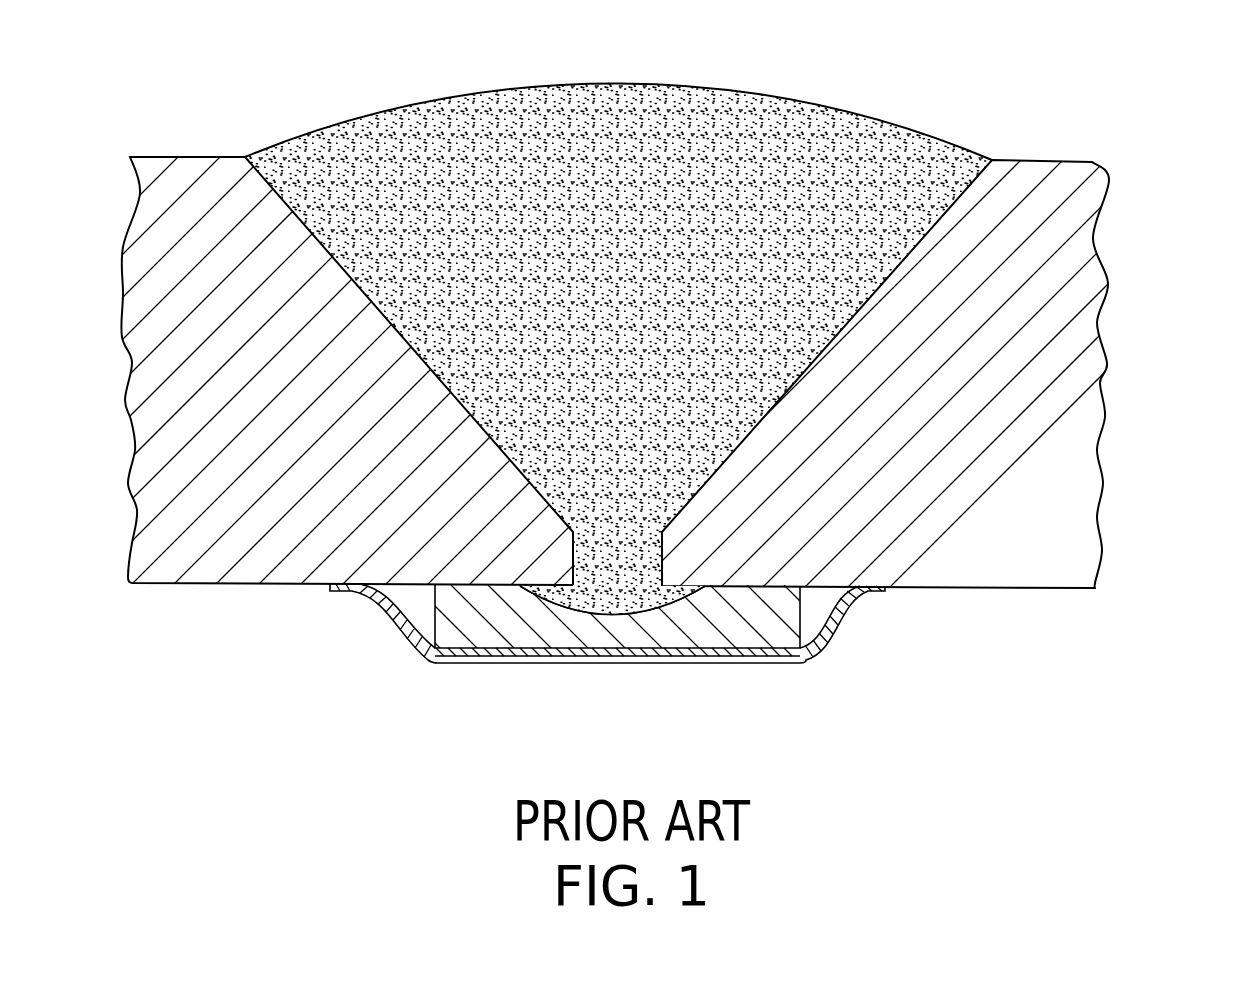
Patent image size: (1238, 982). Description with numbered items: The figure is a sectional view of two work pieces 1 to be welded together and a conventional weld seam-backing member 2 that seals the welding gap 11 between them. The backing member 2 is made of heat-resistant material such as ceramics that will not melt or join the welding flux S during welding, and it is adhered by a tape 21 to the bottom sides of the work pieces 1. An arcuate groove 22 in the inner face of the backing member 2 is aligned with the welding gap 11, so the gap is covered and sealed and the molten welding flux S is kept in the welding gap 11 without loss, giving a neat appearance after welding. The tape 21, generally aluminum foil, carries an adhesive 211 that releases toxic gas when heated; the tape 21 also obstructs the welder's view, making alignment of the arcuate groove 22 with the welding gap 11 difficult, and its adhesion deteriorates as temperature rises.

The work piece 1 is at (1072, 260).
The welding gap 11 is at (645, 558).
The weld seam-backing member 2 is at (427, 660).
The tape 21 is at (830, 620).
The adhesive 211 is at (387, 610).
The arcuate groove 22 is at (657, 653).
The welding flux S is at (840, 147).